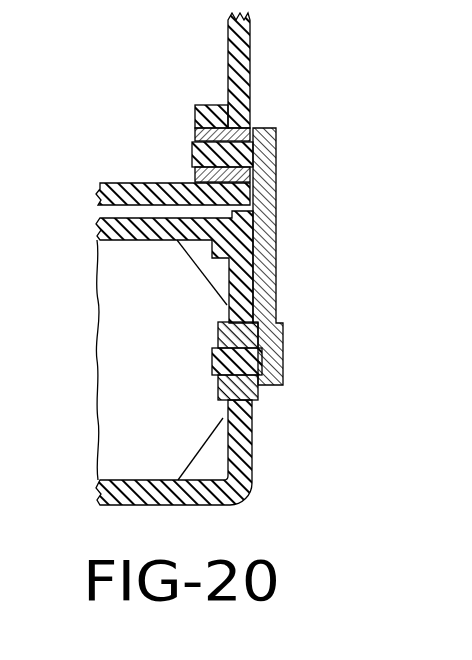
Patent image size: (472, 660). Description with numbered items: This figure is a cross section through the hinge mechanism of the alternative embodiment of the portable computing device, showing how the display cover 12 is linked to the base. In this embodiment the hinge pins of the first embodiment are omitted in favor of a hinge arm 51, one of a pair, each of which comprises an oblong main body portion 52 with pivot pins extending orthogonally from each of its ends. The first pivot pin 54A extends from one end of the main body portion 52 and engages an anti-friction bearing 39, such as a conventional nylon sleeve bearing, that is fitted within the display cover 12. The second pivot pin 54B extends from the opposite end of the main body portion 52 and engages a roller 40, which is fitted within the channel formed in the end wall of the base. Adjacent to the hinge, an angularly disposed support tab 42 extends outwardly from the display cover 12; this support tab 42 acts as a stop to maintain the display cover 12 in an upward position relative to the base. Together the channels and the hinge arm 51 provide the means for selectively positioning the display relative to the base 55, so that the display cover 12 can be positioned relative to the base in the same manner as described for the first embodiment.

The display cover 12 is at (243, 58).
The anti-friction bearing 39 is at (198, 129).
The first pivot pin 54A is at (196, 151).
The support tab 42 is at (248, 240).
The hinge arm 51 is at (265, 195).
The main body portion 52 is at (265, 288).
The roller 40 is at (260, 400).
The second pivot pin 54B is at (212, 363).
The means for selectively positioning the display relative to the base 55 is at (308, 352).